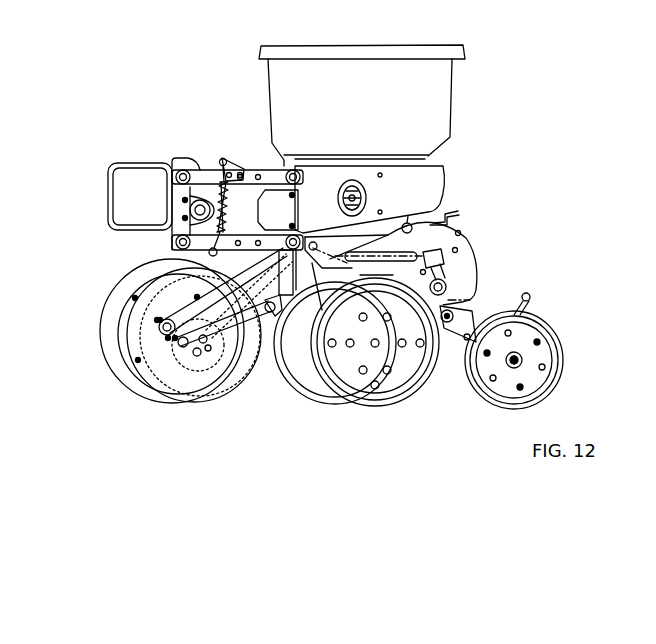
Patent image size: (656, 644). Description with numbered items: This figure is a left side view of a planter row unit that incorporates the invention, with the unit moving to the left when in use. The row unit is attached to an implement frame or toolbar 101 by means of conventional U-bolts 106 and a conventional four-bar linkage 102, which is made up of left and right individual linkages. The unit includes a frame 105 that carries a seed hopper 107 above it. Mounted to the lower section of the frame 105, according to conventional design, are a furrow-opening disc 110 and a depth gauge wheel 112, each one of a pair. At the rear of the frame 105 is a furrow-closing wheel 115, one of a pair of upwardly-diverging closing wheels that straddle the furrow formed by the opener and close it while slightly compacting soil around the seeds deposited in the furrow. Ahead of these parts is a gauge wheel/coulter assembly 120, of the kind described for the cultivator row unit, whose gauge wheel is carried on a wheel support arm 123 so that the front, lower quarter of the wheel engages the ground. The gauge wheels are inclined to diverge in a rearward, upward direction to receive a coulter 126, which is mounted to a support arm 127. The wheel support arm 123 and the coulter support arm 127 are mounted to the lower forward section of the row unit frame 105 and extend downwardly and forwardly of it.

The implement frame or toolbar 101 is at (114, 195).
The four-bar linkage 102 is at (244, 165).
The frame 105 is at (453, 239).
The U-bolts 106 is at (125, 163).
The seed hopper 107 is at (437, 102).
The furrow-opening disc 110 is at (307, 377).
The depth gauge wheel 112 is at (115, 365).
The furrow-closing wheel 115 is at (555, 330).
The gauge wheel/coulter assembly 120 is at (92, 310).
The wheel support arm 123 is at (258, 283).
The coulter 126 is at (220, 392).
The support arm 127 is at (242, 315).